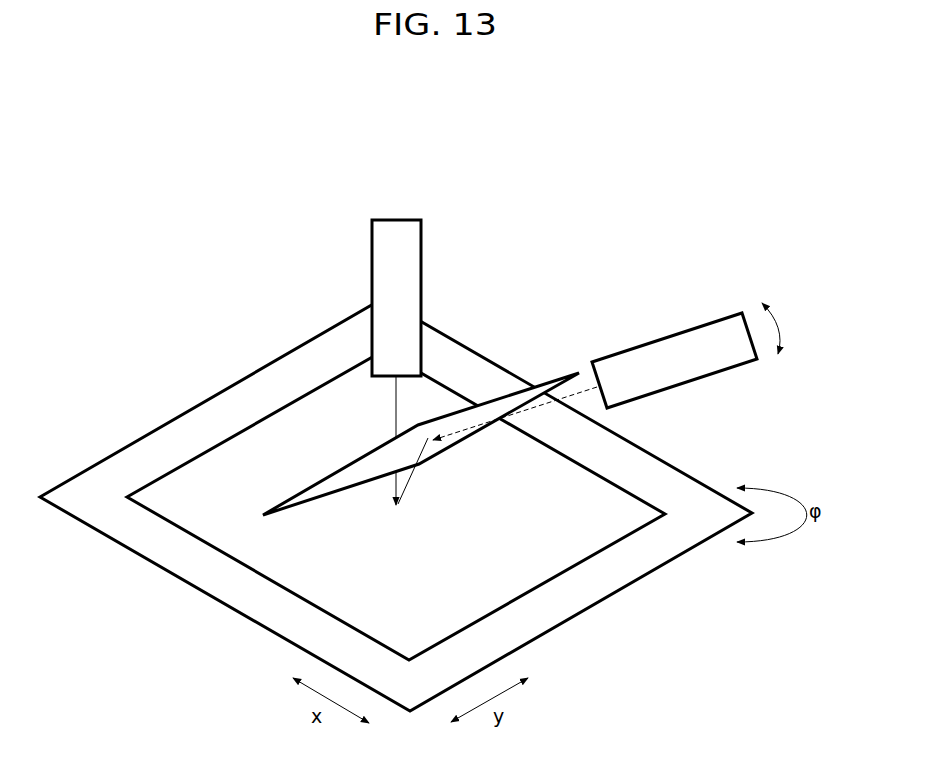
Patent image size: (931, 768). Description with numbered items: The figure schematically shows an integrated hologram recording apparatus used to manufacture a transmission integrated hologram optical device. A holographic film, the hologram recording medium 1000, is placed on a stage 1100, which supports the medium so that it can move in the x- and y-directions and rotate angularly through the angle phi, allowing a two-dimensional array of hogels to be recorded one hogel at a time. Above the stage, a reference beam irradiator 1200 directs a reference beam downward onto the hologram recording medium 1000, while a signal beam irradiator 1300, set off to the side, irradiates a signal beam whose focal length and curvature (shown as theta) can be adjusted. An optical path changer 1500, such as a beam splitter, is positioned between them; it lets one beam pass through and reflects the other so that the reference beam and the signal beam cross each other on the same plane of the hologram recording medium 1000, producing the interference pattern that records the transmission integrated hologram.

The hologram recording medium 1000 is at (278, 433).
The stage 1100 is at (178, 435).
The reference beam irradiator 1200 is at (396, 219).
The signal beam irradiator 1300 is at (668, 342).
The optical path changer 1500 is at (502, 397).